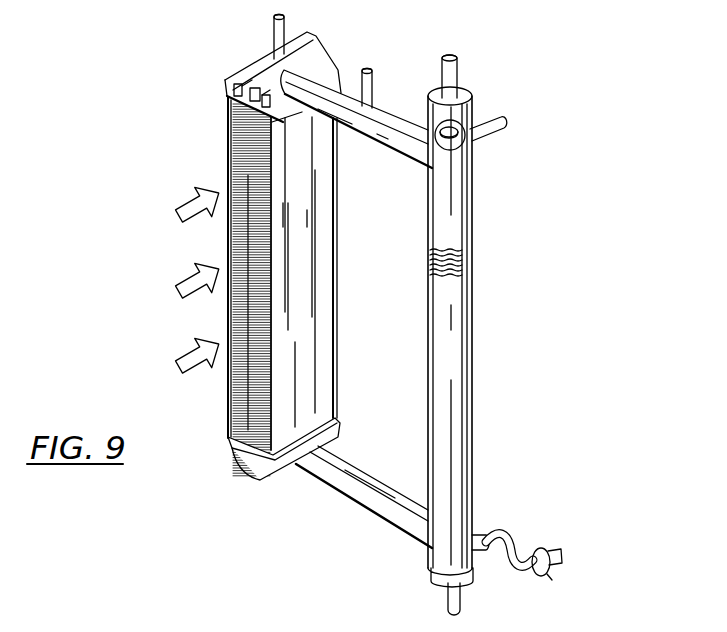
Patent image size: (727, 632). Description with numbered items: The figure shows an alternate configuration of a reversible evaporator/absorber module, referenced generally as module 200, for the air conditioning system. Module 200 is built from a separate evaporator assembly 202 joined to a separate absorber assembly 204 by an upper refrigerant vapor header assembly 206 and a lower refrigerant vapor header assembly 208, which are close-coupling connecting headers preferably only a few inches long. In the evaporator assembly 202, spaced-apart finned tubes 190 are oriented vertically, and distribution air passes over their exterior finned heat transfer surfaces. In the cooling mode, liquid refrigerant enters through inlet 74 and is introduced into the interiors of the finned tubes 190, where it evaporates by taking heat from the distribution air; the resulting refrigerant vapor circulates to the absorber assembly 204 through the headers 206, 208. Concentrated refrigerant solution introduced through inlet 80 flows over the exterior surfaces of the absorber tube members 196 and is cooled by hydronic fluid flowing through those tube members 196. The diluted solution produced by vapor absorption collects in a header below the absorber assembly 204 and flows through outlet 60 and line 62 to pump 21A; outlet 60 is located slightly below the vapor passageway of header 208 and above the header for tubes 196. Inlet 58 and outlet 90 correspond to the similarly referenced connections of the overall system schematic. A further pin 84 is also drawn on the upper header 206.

The evaporator/absorber module 200 is at (413, 310).
The evaporator assembly 202 is at (327, 327).
The absorber assembly 204 is at (460, 312).
The upper refrigerant vapor header assembly 206 is at (407, 142).
The lower refrigerant vapor header assembly 208 is at (377, 506).
The finned tubes 190 is at (247, 421).
The inlet 74 is at (284, 30).
The mounting pin 84 is at (372, 82).
The outlet 90 is at (449, 74).
The inlet 80 is at (505, 121).
The tube members 196 is at (466, 148).
The inlet 58 is at (448, 607).
The outlet 60 is at (485, 535).
The line 62 is at (515, 578).
The pump 21A is at (541, 547).